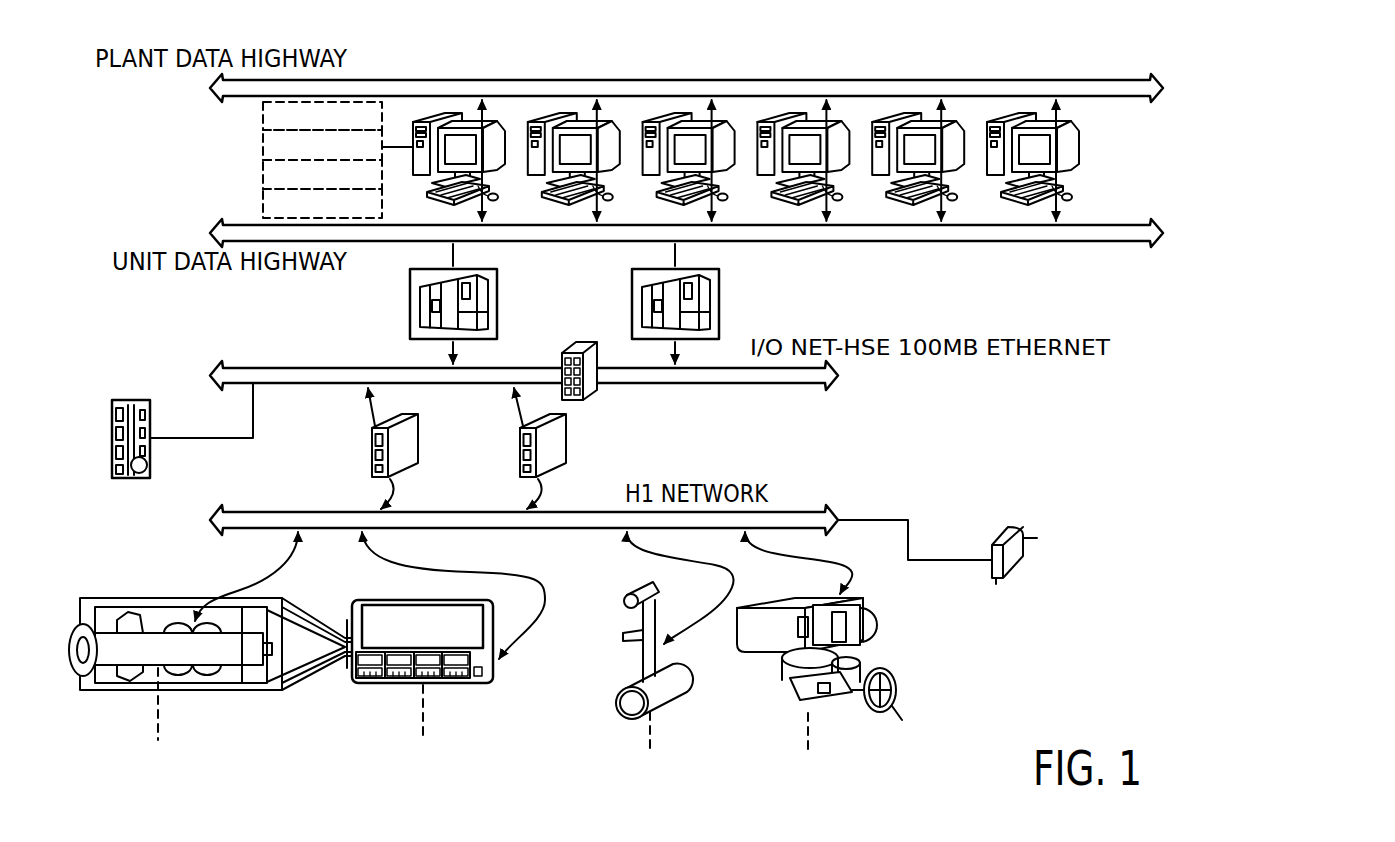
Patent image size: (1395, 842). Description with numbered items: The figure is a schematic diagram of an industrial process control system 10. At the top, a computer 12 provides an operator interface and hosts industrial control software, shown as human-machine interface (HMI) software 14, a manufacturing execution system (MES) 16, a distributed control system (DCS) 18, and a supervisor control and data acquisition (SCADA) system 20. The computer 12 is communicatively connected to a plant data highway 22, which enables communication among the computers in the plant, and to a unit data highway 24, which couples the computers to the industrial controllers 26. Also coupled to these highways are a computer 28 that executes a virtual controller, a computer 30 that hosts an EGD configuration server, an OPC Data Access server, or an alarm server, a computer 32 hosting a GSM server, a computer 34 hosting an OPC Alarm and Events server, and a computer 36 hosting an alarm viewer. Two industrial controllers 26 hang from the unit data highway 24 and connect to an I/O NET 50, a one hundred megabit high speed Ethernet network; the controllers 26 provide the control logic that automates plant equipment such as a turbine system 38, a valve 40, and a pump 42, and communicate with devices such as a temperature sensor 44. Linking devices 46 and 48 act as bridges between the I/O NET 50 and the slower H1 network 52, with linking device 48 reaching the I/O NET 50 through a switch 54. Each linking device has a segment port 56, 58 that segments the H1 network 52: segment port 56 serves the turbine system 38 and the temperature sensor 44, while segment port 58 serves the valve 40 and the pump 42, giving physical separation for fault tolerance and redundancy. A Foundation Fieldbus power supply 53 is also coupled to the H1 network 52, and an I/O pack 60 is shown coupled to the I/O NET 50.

The industrial process control system 10 is at (1303, 81).
The computer 12 is at (433, 122).
The human-machine interface (HMI) software 14 is at (262, 116).
The manufacturing execution system (MES) 16 is at (262, 146).
The distributed control system (DCS) 18 is at (262, 175).
The supervisor control and data acquisition (SCADA) system 20 is at (262, 204).
The plant data highway 22 is at (1163, 80).
The unit data highway 24 is at (1163, 225).
The industrial controller 26 is at (497, 300).
The computer 28 is at (548, 122).
The computer 30 is at (662, 122).
The computer 32 is at (777, 122).
The computer 34 is at (892, 122).
The computer 36 is at (1007, 122).
The turbine system 38 is at (237, 701).
The valve 40 is at (660, 710).
The pump 42 is at (905, 700).
The temperature sensor 44 is at (452, 684).
The linking device 46 is at (413, 441).
The linking device 48 is at (558, 441).
The I/O NET 50 is at (840, 383).
The H1 network 52 is at (840, 511).
The Foundation Fieldbus power supply 53 is at (1004, 531).
The switch 54 is at (589, 398).
The segment port 56 is at (365, 482).
The segment port 58 is at (510, 482).
The I/O pack 60 is at (128, 400).